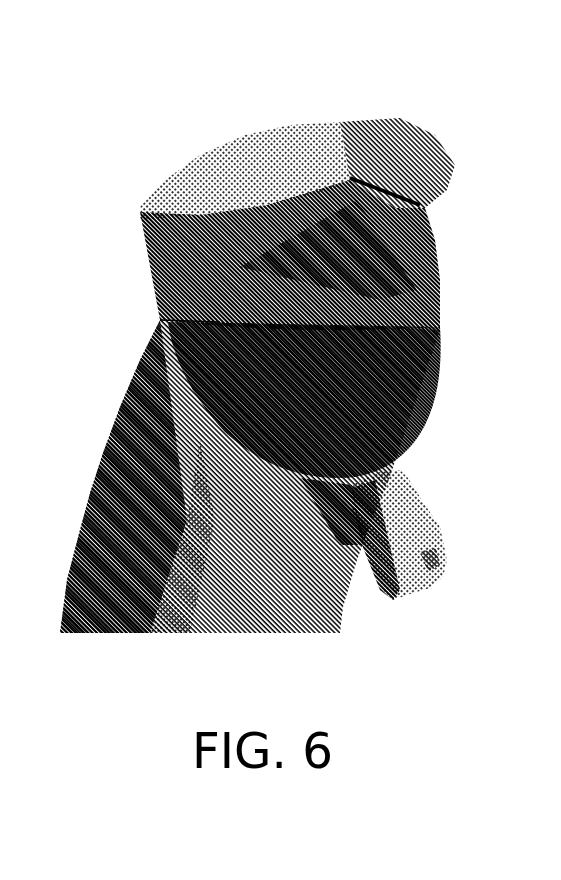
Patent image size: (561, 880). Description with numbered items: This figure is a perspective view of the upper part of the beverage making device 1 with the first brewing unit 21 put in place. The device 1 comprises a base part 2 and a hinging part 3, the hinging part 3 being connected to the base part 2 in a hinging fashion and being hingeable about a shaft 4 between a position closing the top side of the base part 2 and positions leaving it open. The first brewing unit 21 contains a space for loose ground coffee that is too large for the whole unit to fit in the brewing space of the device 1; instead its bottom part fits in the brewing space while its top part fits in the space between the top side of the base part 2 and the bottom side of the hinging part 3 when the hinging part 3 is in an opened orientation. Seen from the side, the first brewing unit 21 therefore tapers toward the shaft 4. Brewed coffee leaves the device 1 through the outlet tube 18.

The beverage making device 1 is at (151, 120).
The base part 2 is at (247, 612).
The hinging part 3 is at (243, 157).
The shaft 4 is at (158, 311).
The outlet tube 18 is at (407, 578).
The first brewing unit 21 is at (419, 348).